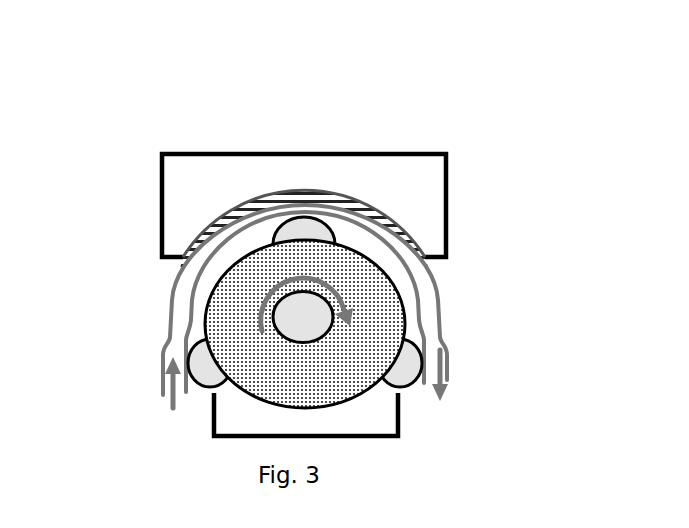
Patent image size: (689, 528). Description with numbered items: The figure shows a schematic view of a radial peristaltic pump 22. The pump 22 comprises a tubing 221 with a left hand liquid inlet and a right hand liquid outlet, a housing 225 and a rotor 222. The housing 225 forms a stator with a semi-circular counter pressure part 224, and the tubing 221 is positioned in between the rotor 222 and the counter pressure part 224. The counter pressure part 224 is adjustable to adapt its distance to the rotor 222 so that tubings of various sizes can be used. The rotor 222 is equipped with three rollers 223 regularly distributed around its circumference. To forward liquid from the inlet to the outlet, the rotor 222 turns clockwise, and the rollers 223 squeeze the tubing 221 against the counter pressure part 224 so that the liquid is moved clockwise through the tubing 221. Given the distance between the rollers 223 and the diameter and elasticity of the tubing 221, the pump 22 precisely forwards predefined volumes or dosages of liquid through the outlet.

The radial peristaltic pump 22 is at (337, 238).
The tubing 221 is at (183, 277).
The rotor 222 is at (388, 300).
The rollers 223 is at (306, 222).
The counter pressure part 224 is at (230, 208).
The housing 225 is at (438, 182).